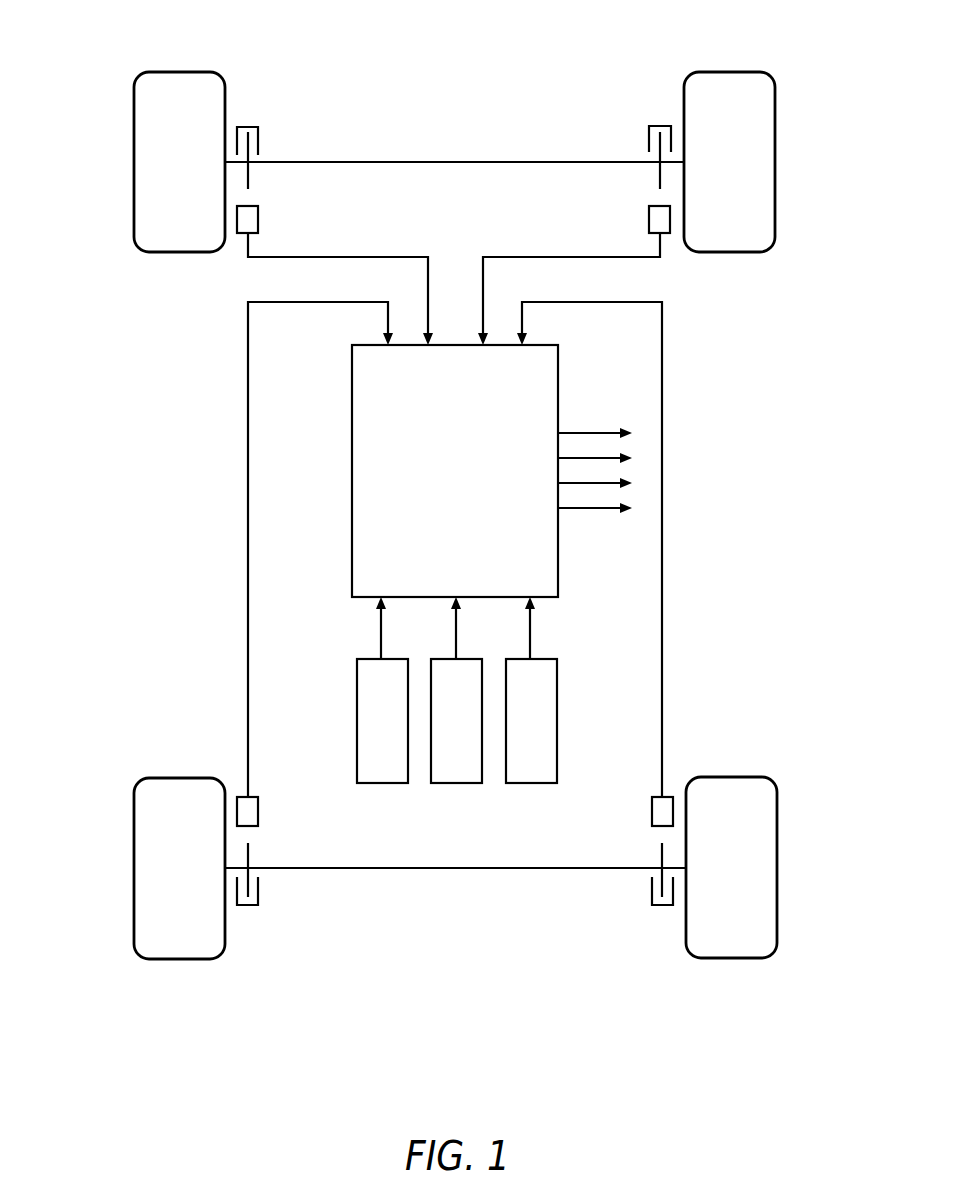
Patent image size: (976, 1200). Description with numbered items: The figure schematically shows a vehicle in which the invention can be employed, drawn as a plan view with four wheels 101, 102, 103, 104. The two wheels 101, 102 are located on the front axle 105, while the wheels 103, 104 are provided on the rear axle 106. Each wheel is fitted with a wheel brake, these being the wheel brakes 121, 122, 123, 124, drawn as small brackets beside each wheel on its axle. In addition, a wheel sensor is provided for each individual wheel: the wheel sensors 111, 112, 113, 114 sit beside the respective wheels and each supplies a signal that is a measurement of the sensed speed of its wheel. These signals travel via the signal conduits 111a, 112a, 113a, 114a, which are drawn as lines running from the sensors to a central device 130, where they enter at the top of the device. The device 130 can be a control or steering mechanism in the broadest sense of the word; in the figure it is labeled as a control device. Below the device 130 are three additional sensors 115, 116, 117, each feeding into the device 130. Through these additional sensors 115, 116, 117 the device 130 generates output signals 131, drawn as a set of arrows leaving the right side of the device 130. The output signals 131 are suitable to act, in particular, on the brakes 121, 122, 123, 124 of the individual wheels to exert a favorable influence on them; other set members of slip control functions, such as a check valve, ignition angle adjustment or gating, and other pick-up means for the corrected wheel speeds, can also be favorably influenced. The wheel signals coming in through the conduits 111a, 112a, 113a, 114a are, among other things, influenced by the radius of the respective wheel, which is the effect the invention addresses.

The wheel 101 is at (147, 118).
The wheel 102 is at (758, 117).
The wheel 103 is at (762, 910).
The wheel 104 is at (150, 913).
The front axle 105 is at (464, 160).
The rear axle 106 is at (464, 870).
The wheel sensor 111 is at (251, 220).
The wheel sensor 112 is at (657, 220).
The wheel sensor 113 is at (658, 812).
The wheel sensor 114 is at (252, 812).
The signal conduit 111a is at (262, 258).
The signal conduit 112a is at (645, 258).
The signal conduit 113a is at (662, 558).
The signal conduit 114a is at (249, 560).
The additional sensor 115 is at (357, 720).
The additional sensor 116 is at (457, 783).
The additional sensor 117 is at (557, 717).
The wheel brake 121 is at (257, 127).
The wheel brake 122 is at (651, 126).
The wheel brake 123 is at (652, 905).
The wheel brake 124 is at (257, 905).
The device 130 is at (468, 449).
The output signals 131 is at (604, 420).